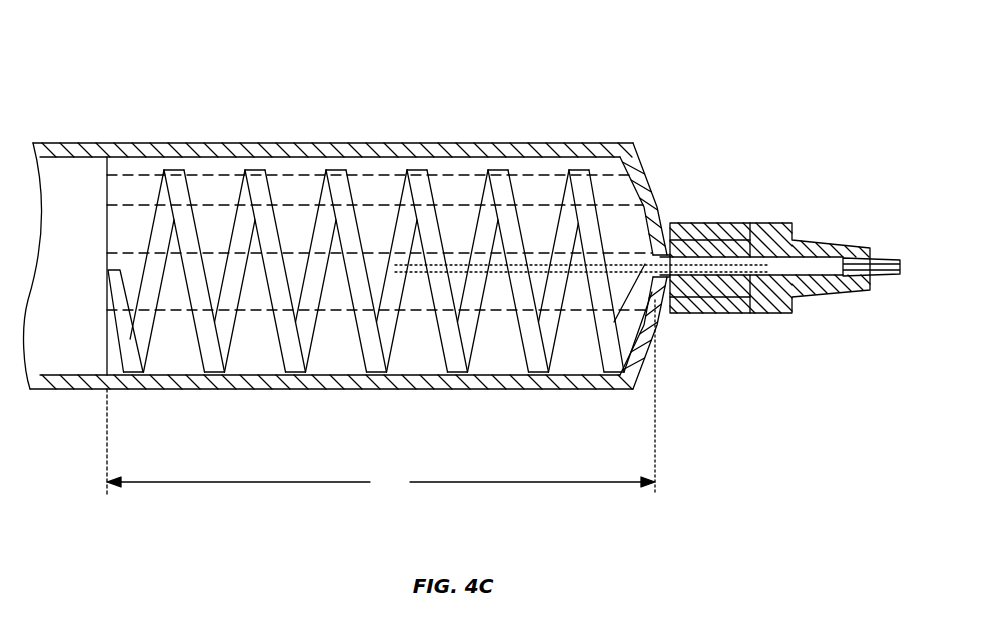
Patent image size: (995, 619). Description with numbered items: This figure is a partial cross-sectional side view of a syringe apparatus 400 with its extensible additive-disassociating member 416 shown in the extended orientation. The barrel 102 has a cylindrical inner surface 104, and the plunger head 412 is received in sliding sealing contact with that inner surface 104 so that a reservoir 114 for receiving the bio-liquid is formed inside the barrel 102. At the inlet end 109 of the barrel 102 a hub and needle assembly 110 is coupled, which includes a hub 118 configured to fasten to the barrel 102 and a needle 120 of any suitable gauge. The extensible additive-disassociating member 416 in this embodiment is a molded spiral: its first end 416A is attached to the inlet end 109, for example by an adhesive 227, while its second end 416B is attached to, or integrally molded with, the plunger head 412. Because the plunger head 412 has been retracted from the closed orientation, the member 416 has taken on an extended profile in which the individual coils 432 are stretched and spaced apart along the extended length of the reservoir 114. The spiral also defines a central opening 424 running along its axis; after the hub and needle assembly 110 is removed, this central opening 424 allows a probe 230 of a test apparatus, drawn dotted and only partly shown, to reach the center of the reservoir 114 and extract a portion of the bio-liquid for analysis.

The syringe apparatus 400 is at (636, 98).
The barrel 102 is at (100, 136).
The inner surface 104 is at (283, 178).
The reservoir 114 is at (445, 198).
The plunger head 412 is at (88, 280).
The extensible additive-disassociating member 416 is at (322, 357).
The first end 416A is at (643, 250).
The second end 416B is at (128, 252).
The central opening 424 is at (570, 254).
The coils 432 is at (139, 376).
The hub and needle assembly 110 is at (799, 205).
The hub 118 is at (707, 221).
The inlet end 109 is at (706, 327).
The adhesive 227 is at (658, 302).
The probe 230 is at (746, 292).
The needle 120 is at (881, 257).